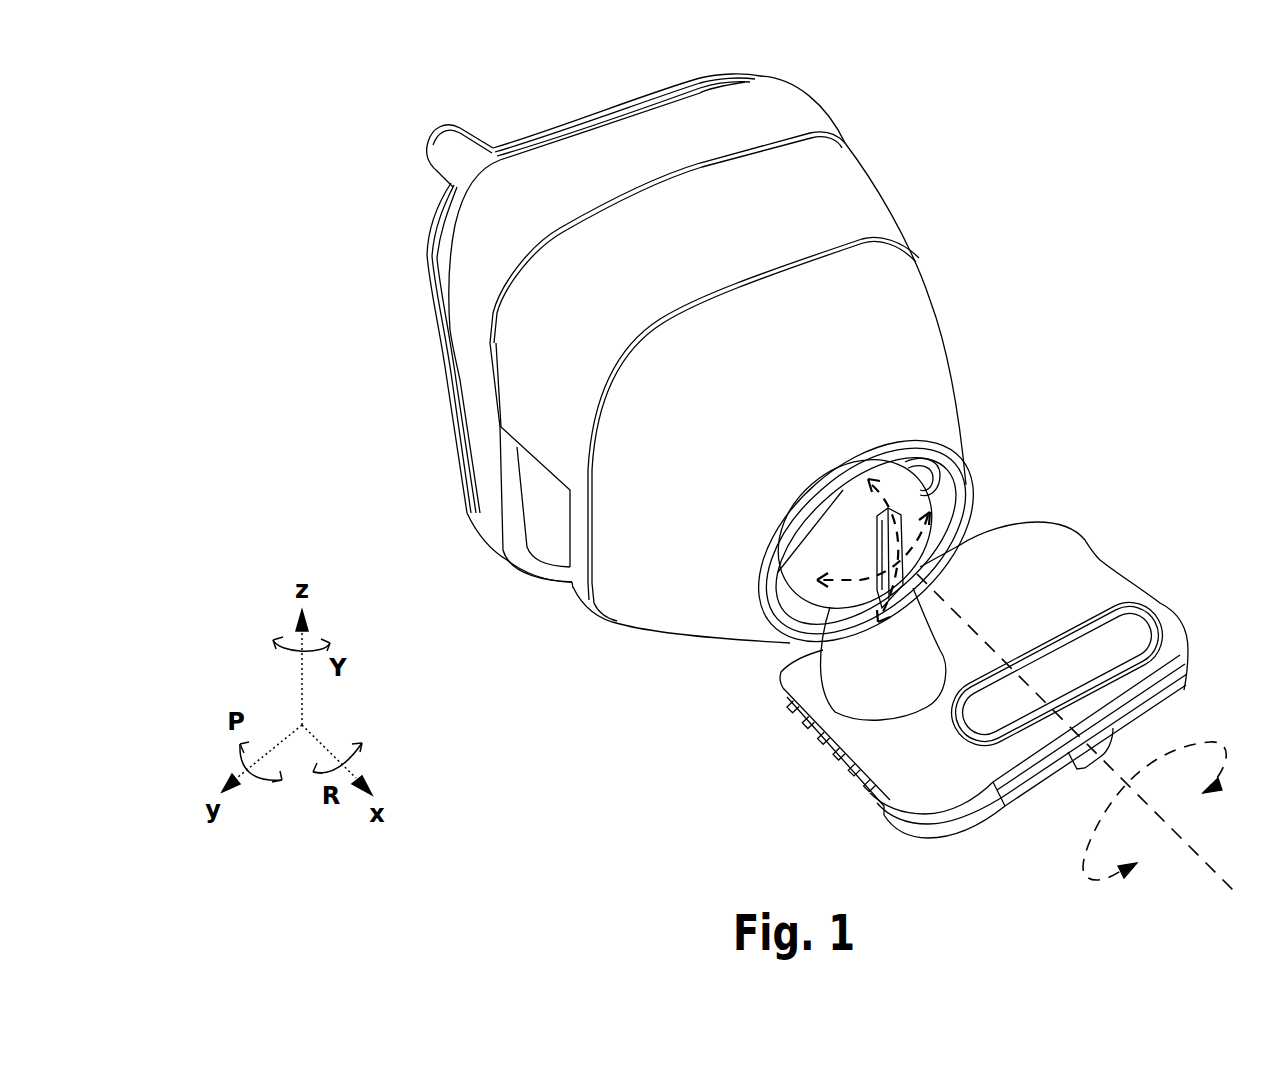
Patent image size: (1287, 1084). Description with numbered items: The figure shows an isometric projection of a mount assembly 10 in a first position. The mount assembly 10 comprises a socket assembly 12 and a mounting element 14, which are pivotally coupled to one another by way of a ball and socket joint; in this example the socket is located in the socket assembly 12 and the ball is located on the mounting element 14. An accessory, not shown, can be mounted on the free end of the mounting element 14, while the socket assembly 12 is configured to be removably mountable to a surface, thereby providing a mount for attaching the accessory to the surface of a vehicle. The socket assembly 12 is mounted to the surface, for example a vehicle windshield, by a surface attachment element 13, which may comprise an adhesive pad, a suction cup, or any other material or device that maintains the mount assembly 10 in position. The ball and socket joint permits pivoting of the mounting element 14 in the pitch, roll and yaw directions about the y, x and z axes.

The mount assembly 10 is at (756, 464).
The socket assembly 12 is at (900, 330).
The surface attachment element 13 is at (438, 310).
The mounting element 14 is at (1043, 578).